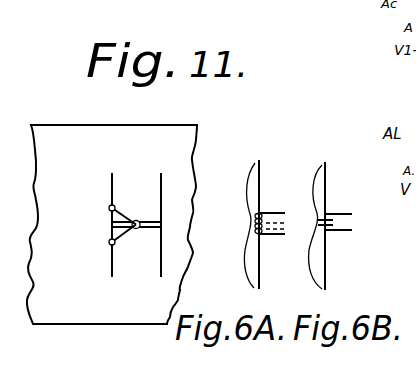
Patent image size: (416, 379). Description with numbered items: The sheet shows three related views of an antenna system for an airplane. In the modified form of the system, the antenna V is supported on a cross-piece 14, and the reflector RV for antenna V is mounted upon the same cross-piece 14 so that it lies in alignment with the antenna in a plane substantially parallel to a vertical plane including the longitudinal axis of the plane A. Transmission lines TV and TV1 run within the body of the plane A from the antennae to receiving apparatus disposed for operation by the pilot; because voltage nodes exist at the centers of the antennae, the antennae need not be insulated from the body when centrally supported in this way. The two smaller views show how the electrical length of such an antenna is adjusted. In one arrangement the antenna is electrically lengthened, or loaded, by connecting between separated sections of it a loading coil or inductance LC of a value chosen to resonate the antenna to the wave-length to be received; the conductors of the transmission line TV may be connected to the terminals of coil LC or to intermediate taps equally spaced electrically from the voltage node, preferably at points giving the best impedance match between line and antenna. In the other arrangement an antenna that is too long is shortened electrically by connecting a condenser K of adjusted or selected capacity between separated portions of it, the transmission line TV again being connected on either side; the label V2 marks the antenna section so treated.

In FIG. 11, the plane A is at (100, 133).
In FIG. 11, the antenna V is at (112, 196).
In FIG. 6A, the antenna V is at (249, 226).
In FIG. 11, the reflector RV is at (161, 204).
In FIG. 11, the cross-piece 14 is at (150, 229).
In FIG. 11, the transmission line TV is at (127, 216).
In FIG. 6A, the transmission line TV is at (270, 213).
In FIG. 6B, the transmission line TV is at (350, 214).
In FIG. 11, the transmission line TV1 is at (121, 241).
In FIG. 6A, the loading coil LC is at (256, 220).
In FIG. 6B, the vane V2 is at (316, 228).
In FIG. 6B, the condenser K is at (331, 213).